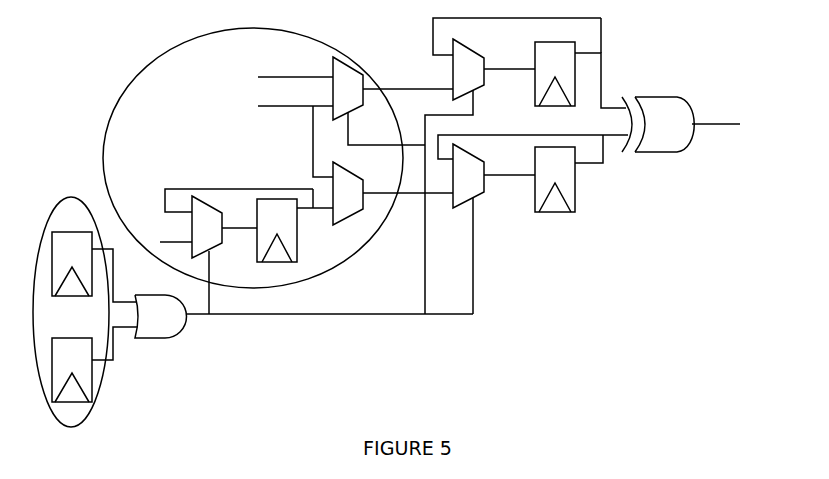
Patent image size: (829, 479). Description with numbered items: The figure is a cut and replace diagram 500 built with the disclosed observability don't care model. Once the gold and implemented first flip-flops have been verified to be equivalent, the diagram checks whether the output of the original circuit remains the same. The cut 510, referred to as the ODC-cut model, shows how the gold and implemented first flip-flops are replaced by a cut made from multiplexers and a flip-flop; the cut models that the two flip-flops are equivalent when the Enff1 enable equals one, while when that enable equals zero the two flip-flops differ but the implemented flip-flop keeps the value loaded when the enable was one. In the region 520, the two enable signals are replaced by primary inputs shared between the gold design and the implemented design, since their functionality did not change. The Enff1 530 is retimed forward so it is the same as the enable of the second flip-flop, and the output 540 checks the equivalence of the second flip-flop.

The cut and replace diagram 500 is at (75, 42).
The cut 510 is at (168, 52).
The En1 and En2 replaced by PI 520 is at (103, 373).
The Enff1 530 is at (272, 315).
The output 540 is at (705, 124).